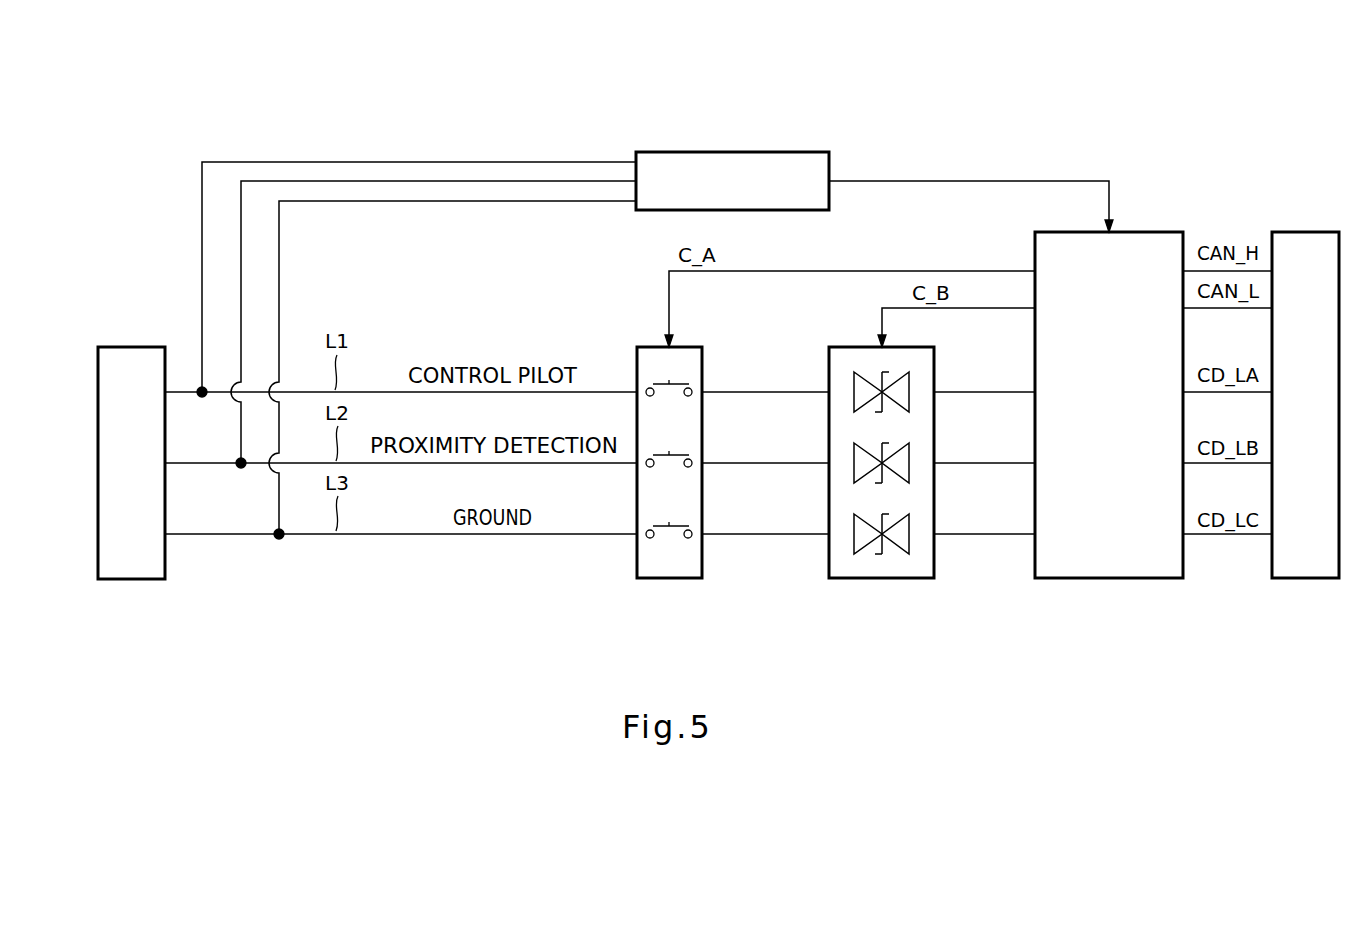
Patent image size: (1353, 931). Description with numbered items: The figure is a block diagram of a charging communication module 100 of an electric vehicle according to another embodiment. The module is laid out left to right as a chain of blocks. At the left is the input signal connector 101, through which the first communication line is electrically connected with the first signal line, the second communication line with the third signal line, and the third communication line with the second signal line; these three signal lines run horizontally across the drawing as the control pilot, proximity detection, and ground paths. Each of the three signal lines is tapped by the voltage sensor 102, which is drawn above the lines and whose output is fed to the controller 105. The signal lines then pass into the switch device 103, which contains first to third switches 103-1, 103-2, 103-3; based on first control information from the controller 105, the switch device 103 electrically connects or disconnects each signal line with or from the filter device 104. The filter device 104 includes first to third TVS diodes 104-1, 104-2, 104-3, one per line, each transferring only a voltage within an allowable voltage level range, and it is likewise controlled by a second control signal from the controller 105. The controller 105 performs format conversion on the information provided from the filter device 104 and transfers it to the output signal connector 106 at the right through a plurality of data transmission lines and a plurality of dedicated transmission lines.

The charging communication module 100 is at (1114, 49).
The input signal connector 101 is at (130, 580).
The voltage sensor 102 is at (733, 151).
The switch device 103 is at (712, 495).
The first switch 103-1 is at (680, 383).
The second switch 103-2 is at (680, 454).
The third switch 103-3 is at (680, 525).
The filter device 104 is at (918, 495).
The first TVS diode 104-1 is at (912, 382).
The second TVS diode 104-2 is at (912, 453).
The third TVS diode 104-3 is at (912, 524).
The controller 105 is at (1110, 580).
The output signal connector 106 is at (1305, 231).